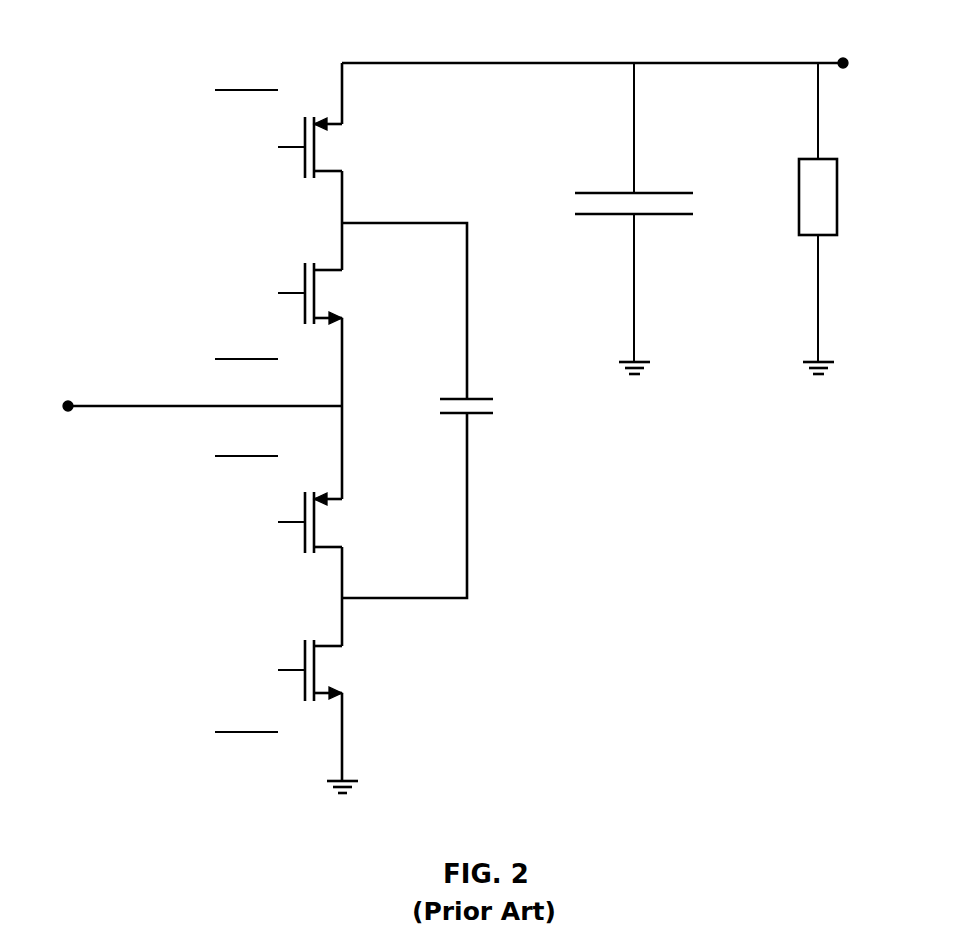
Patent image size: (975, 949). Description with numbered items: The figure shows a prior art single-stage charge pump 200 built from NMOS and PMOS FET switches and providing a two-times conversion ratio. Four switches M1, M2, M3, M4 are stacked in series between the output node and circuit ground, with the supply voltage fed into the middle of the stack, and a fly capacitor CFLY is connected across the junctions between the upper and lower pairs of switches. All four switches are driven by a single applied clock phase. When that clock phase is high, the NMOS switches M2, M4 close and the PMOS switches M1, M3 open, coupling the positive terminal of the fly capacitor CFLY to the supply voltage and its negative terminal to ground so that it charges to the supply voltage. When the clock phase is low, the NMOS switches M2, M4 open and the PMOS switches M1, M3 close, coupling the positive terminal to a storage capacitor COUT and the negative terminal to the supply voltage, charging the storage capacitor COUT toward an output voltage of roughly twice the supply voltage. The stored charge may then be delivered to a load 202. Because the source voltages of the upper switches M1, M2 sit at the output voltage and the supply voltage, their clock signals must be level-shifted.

The single-stage charge pump 200 is at (88, 27).
The load 202 is at (837, 185).
The PMOS FET switch M1 is at (296, 147).
The NMOS FET switch M2 is at (296, 293).
The PMOS FET switch M3 is at (296, 522).
The NMOS FET switch M4 is at (296, 670).
The fly capacitor CFLY is at (443, 410).
The storage capacitor COUT is at (663, 218).